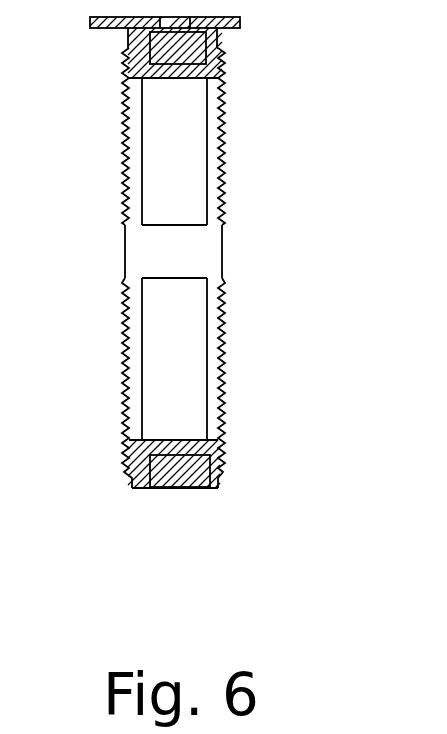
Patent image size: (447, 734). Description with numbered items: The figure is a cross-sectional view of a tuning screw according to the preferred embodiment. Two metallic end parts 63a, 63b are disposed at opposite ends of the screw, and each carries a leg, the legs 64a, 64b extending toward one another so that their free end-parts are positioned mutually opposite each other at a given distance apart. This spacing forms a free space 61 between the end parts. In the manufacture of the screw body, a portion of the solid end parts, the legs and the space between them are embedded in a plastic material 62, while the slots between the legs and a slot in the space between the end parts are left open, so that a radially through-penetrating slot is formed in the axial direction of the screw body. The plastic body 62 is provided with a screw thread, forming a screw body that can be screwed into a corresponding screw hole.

The free space 61 is at (175, 252).
The plastic material 62 is at (130, 222).
The metallic end part 63a is at (190, 68).
The metallic end part 63b is at (205, 454).
The leg 64a is at (180, 186).
The leg 64b is at (175, 402).